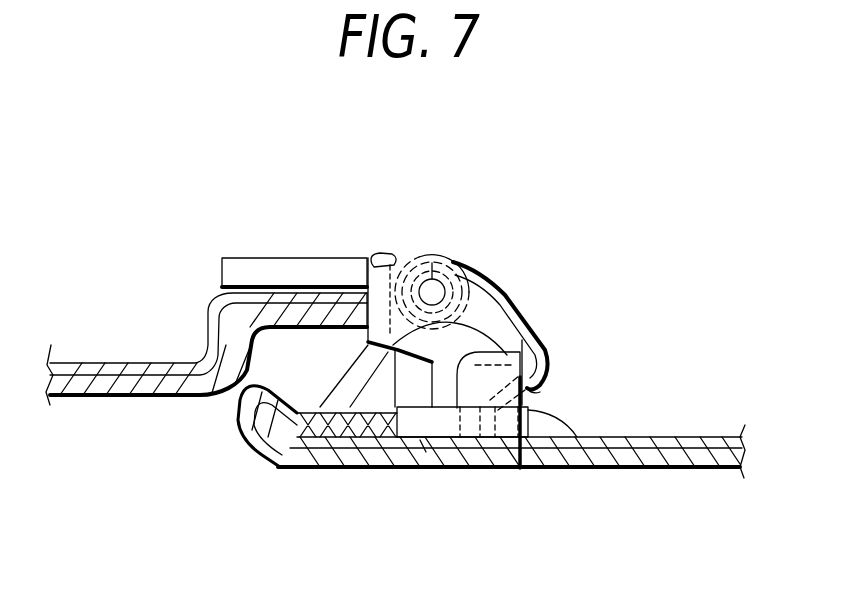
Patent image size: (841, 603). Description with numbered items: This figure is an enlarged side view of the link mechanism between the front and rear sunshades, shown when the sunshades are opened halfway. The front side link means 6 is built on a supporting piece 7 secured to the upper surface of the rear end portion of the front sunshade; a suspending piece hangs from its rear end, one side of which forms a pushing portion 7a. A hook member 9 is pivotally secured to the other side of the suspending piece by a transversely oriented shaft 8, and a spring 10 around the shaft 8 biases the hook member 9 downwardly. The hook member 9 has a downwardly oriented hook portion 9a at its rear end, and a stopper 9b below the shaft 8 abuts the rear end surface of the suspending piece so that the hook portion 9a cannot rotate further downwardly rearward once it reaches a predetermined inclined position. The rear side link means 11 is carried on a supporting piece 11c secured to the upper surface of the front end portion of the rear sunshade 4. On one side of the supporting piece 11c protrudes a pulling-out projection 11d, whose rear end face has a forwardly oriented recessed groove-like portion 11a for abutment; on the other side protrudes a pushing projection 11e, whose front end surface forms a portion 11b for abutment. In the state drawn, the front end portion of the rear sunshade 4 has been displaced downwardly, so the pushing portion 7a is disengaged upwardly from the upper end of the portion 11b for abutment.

The rear sunshade 4 is at (618, 458).
The front side link means 6 is at (520, 258).
The supporting piece 7 is at (272, 267).
The pushing portion 7a is at (278, 467).
The shaft 8 is at (437, 257).
The hook member 9 is at (520, 322).
The hook portion 9a is at (540, 386).
The stopper 9b is at (333, 435).
The spring 10 is at (380, 250).
The rear side link means 11 is at (517, 467).
The recessed groove-like portion for abutment 11a is at (470, 440).
The portion for abutment 11b is at (380, 440).
The supporting piece 11c is at (585, 450).
The pulling-out projection 11d is at (505, 327).
The pushing projection 11e is at (424, 450).